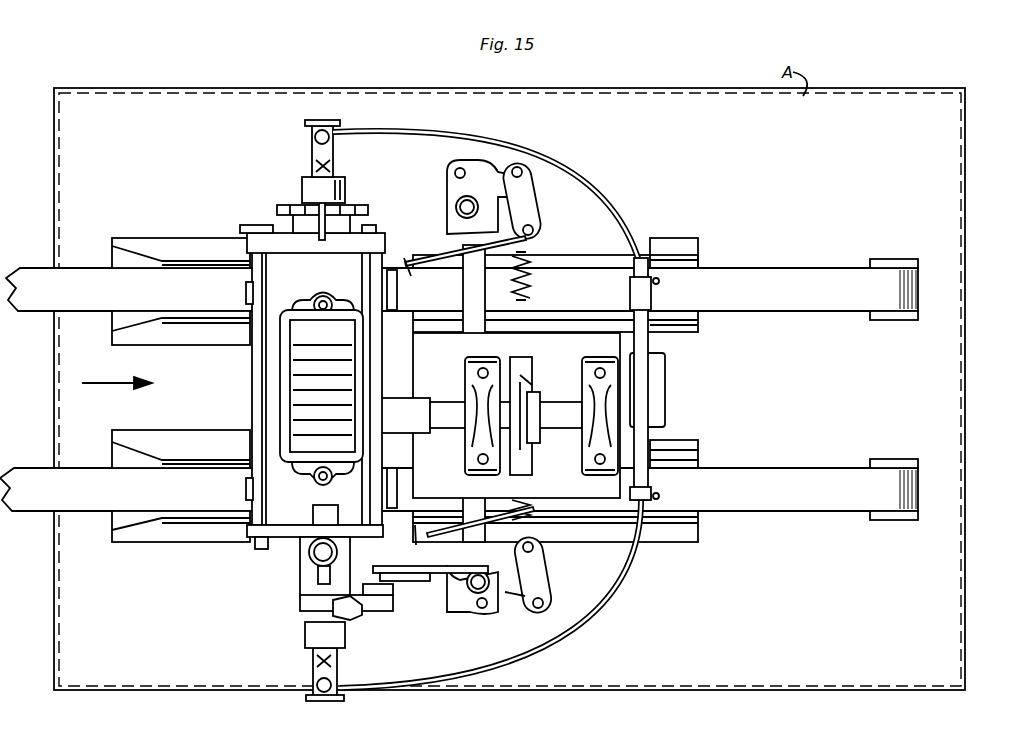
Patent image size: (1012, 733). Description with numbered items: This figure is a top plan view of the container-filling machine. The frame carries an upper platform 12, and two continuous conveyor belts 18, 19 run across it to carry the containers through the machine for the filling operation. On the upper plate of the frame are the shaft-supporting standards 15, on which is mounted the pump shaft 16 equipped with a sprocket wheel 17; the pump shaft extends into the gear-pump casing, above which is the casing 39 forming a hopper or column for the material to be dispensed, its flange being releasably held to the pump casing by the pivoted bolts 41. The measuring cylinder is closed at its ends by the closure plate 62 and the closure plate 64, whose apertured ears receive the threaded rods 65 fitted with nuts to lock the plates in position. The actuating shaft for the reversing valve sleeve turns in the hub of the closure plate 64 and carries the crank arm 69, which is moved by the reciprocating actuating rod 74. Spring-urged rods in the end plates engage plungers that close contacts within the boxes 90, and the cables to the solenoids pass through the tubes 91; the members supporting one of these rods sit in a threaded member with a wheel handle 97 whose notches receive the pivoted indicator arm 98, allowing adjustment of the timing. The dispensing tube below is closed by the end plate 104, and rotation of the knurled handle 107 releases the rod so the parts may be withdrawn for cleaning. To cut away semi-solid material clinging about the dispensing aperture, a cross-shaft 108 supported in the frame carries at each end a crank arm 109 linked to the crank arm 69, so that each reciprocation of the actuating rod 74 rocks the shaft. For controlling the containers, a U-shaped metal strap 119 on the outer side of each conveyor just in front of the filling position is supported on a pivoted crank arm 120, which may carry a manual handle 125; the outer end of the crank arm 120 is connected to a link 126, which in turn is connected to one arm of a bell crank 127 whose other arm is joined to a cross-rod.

The upper platform 12 is at (935, 397).
The shaft-supporting standards 15 is at (478, 398).
The pump shaft 16 is at (558, 410).
The sprocket wheel 17 is at (530, 382).
The conveyor belt 18 is at (78, 285).
The conveyor belt 19 is at (80, 478).
The casing 39 is at (362, 338).
The pivoted bolts 41 is at (323, 298).
The closure plate 62 is at (282, 240).
The closure plate 64 is at (283, 538).
The threaded rods 65 is at (262, 385).
The crank arm 69 is at (358, 612).
The actuating rod 74 is at (396, 596).
The box 90 is at (312, 152).
The tubes 91 is at (392, 135).
The wheel handle 97 is at (355, 210).
The pivoted indicator arm 98 is at (305, 204).
The end plate 104 is at (398, 296).
The handle 107 is at (246, 293).
The cross-shaft 108 is at (472, 548).
The crank arm 109 is at (414, 575).
The U-shaped metal strap 119 is at (446, 240).
The crank arm 120 is at (455, 187).
The manual handle 125 is at (458, 207).
The link 126 is at (488, 172).
The bell crank 127 is at (532, 200).